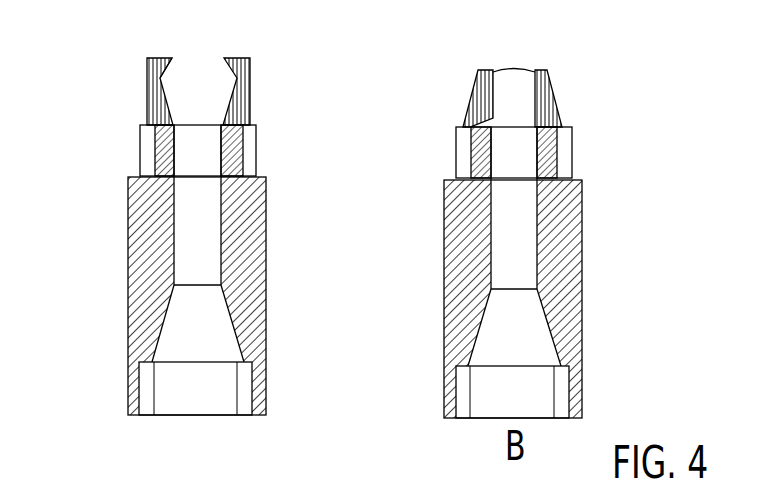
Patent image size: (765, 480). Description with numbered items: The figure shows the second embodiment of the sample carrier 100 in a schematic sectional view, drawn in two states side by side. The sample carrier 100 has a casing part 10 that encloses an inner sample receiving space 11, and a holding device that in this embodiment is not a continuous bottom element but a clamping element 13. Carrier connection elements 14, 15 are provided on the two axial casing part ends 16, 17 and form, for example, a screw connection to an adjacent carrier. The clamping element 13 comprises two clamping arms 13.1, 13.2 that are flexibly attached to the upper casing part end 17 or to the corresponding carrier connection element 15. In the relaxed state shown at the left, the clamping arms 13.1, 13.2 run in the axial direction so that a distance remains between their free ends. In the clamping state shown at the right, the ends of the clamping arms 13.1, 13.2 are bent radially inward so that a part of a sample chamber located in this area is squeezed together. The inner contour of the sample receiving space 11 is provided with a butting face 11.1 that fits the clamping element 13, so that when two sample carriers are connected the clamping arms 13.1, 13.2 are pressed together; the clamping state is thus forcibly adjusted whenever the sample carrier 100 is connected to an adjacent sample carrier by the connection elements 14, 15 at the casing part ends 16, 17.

The sample carrier 100 is at (332, 236).
The casing part 10 is at (154, 297).
The inner sample receiving space 11 is at (209, 235).
The butting face 11.1 is at (548, 318).
The clamping element 13 is at (338, 65).
The first clamping arm 13.1 is at (146, 73).
The second clamping arm 13.2 is at (236, 102).
The carrier connection element 14 is at (247, 388).
The carrier connection element 15 is at (252, 150).
The axial casing part end 16 is at (104, 408).
The upper casing part end 17 is at (338, 89).